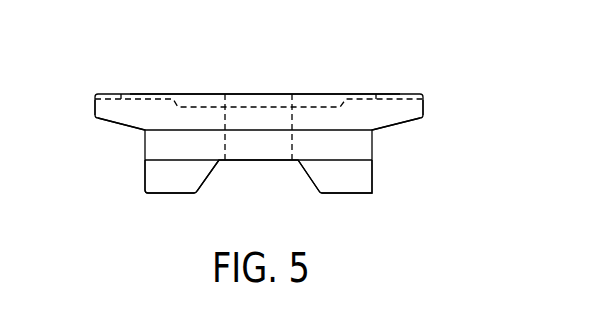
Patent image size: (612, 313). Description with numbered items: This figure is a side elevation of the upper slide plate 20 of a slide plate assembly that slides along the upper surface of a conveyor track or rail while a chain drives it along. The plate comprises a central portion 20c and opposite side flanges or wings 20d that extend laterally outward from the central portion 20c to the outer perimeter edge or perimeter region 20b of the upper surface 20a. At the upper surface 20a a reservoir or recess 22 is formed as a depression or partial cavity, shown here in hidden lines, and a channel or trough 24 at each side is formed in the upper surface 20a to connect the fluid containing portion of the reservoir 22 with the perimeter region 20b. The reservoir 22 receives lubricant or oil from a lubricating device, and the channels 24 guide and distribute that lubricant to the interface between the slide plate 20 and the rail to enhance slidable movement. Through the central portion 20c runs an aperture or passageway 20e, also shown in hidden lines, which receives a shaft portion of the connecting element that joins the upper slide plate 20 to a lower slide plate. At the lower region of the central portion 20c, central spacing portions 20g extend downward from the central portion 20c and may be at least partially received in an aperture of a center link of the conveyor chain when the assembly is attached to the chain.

The upper slide plate 20 is at (88, 55).
The upper surface 20a is at (185, 94).
The outer perimeter edge 20b is at (94, 105).
The central portion 20c is at (218, 149).
The side flanges 20d is at (113, 115).
The passageway 20e is at (292, 160).
The central spacing portions 20g is at (165, 182).
The reservoir 22 is at (262, 102).
The channel 24 is at (121, 97).